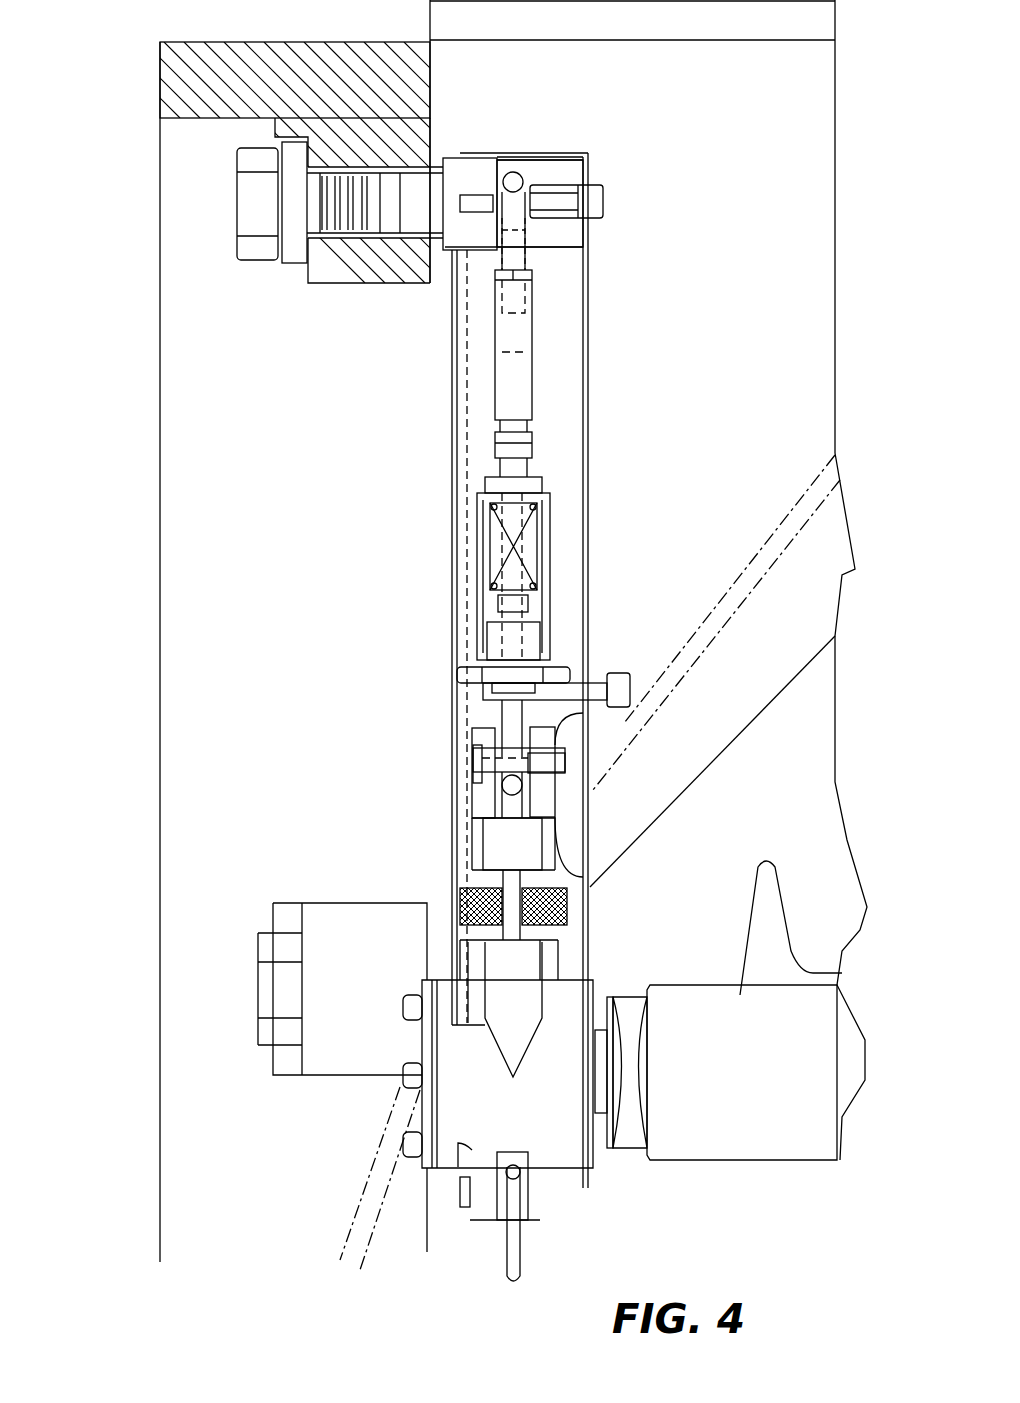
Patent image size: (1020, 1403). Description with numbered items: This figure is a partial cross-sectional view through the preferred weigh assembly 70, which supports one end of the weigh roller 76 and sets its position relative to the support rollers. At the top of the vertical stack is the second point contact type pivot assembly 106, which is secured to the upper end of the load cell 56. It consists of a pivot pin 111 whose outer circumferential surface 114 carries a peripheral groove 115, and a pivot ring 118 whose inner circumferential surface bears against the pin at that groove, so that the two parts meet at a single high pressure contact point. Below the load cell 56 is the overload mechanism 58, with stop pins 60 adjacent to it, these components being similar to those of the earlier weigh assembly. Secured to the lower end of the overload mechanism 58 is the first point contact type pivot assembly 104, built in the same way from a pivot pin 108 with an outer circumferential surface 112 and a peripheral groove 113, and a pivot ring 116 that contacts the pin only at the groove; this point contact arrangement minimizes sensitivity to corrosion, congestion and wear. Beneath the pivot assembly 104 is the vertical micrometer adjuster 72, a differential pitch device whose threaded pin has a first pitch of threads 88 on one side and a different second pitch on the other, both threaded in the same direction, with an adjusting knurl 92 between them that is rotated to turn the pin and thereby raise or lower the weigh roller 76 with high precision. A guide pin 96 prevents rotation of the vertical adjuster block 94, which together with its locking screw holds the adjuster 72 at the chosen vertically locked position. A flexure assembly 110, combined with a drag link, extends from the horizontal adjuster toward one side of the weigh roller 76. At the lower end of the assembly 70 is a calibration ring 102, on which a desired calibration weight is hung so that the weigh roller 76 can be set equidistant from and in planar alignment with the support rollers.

The weigh assembly 70 is at (114, 266).
The second point contact type pivot assembly 106 is at (614, 184).
The outer circumferential surface 114 is at (557, 183).
The peripheral groove 115 is at (512, 172).
The pivot pin 111 is at (580, 202).
The pivot ring 118 is at (513, 237).
The load cell 56 is at (513, 383).
The overload mechanism 58 is at (560, 550).
The stop pins 60 is at (645, 690).
The pivot ring 116 is at (568, 722).
The first point contact type pivot assembly 104 is at (445, 752).
The pivot pin 108 is at (463, 767).
The outer circumferential surface 112 is at (484, 735).
The peripheral groove 113 is at (520, 790).
The vertical adjuster block 94 is at (480, 837).
The first pitch of threads 88 is at (530, 880).
The adjusting knurl 92 is at (568, 908).
The guide pin 96 is at (512, 930).
The vertical micrometer adjuster 72 is at (447, 893).
The calibration ring 102 is at (513, 1258).
The flexure assembly 110 is at (260, 904).
The weigh roller 76 is at (795, 1008).